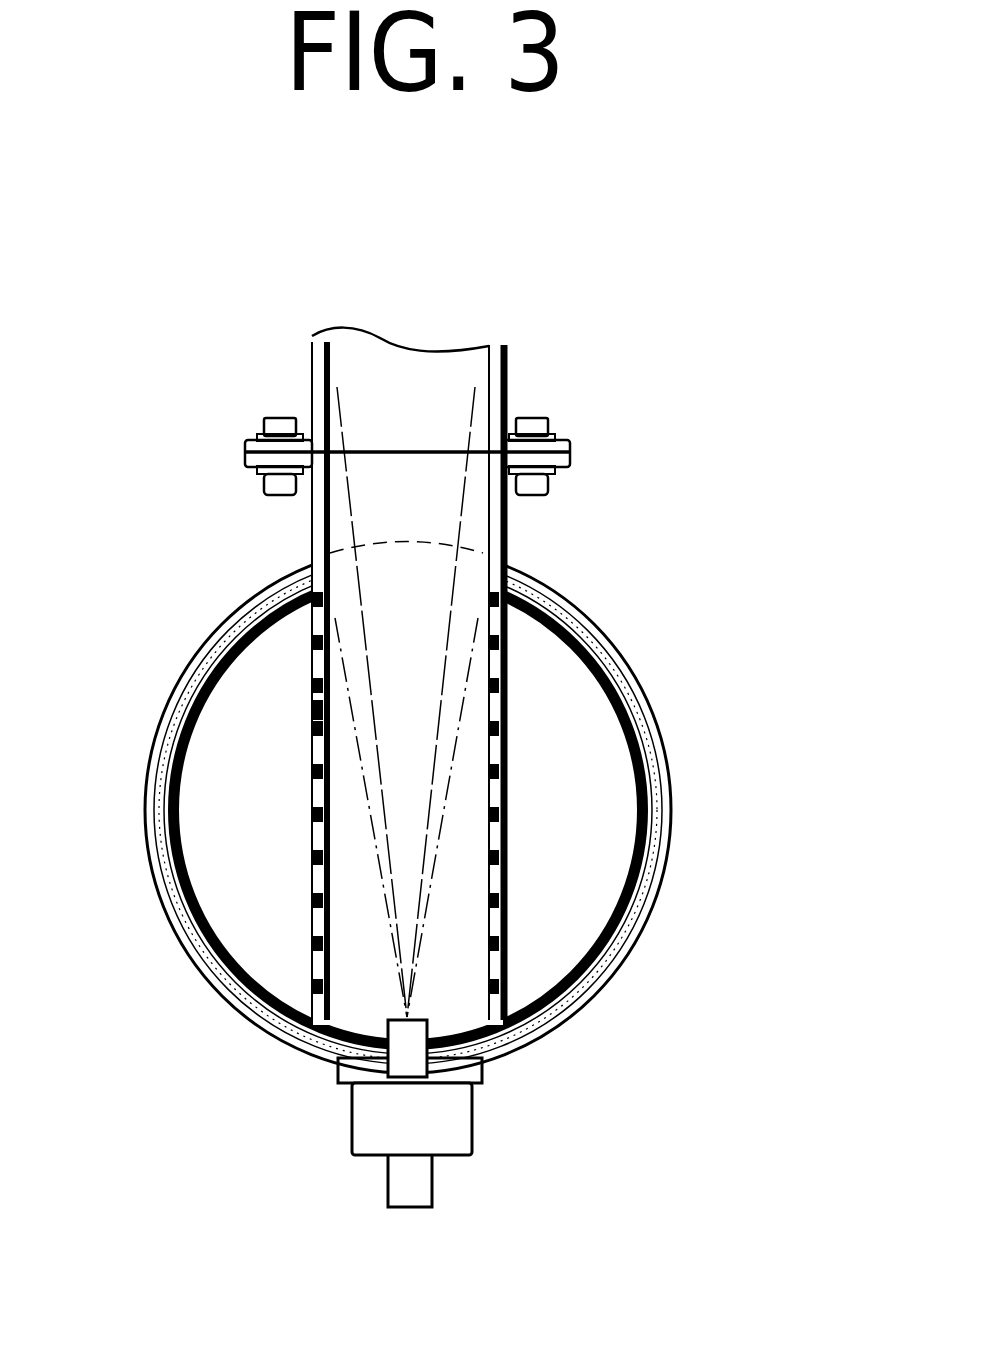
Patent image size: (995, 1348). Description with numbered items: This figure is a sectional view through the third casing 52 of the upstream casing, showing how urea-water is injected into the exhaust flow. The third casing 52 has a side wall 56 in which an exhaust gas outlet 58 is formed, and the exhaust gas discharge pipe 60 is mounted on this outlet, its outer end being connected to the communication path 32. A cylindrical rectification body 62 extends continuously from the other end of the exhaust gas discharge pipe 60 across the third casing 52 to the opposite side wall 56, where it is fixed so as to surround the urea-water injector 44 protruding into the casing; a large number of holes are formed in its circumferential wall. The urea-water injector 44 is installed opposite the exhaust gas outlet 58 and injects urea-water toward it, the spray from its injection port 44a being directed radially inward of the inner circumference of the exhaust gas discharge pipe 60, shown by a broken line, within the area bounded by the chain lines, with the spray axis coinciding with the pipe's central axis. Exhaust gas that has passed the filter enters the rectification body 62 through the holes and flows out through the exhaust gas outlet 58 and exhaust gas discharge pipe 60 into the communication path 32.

The communication path 32 is at (307, 378).
The urea-water injector 44 is at (433, 1120).
The injection port 44a is at (413, 1017).
The third casing 52 is at (739, 641).
The side wall 56 is at (670, 848).
The exhaust gas outlet 58 is at (488, 548).
The exhaust gas discharge pipe 60 is at (307, 522).
The rectification body 62 is at (310, 705).